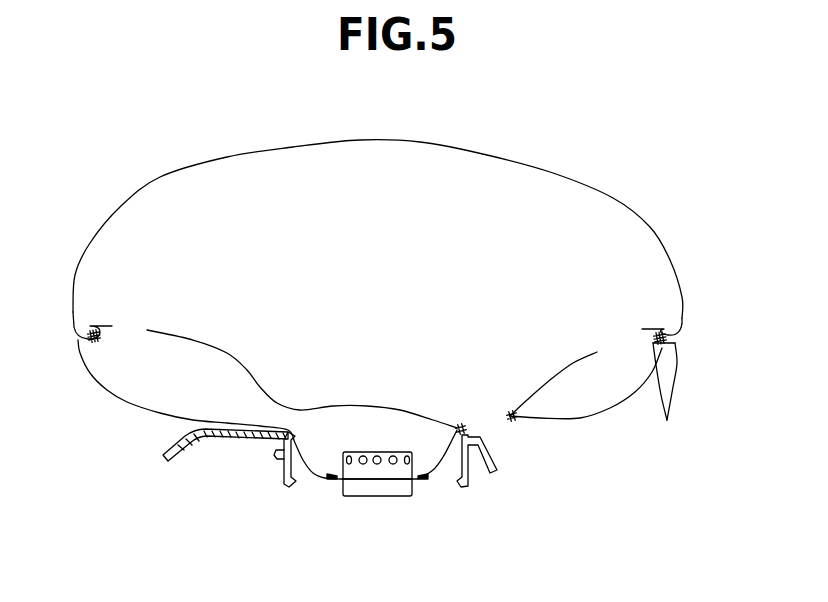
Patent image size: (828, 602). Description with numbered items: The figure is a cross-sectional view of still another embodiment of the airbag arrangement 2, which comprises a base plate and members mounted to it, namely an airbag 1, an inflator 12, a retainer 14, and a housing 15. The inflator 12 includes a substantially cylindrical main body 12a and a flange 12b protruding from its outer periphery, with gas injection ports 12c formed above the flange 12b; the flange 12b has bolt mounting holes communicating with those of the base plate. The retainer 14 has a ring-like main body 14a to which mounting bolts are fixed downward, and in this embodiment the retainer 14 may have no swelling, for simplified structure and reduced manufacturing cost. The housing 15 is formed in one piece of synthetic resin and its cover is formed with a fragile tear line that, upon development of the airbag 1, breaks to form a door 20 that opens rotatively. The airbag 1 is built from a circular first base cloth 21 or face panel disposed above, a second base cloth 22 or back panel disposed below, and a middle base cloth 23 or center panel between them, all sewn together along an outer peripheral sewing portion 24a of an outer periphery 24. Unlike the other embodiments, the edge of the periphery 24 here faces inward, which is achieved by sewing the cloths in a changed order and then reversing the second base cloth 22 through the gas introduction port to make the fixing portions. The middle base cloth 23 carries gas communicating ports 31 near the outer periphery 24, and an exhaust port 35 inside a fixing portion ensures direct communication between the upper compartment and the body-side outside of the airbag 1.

The airbag 1 is at (614, 198).
The airbag arrangement 2 is at (598, 158).
The inflator 12 is at (356, 460).
The main body 12a is at (385, 479).
The flange 12b is at (332, 479).
The gas injection ports 12c is at (379, 452).
The retainer 14 is at (431, 479).
The retainer main body 14a is at (423, 480).
The housing 15 is at (283, 469).
The door 20 is at (223, 436).
The first base cloth 21 is at (649, 226).
The second base cloth 22 is at (603, 408).
The middle base cloth 23 is at (570, 363).
The outer periphery 24 is at (667, 400).
The outer peripheral sewing portion 24a is at (657, 362).
The gas communicating ports 31 is at (125, 330).
The exhaust port 35 is at (496, 428).